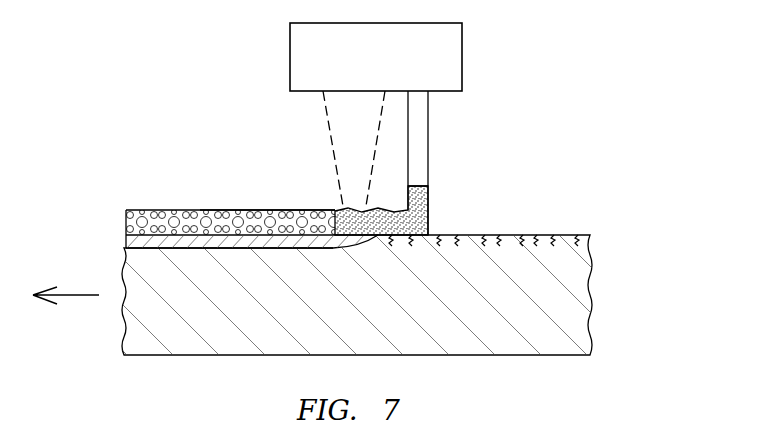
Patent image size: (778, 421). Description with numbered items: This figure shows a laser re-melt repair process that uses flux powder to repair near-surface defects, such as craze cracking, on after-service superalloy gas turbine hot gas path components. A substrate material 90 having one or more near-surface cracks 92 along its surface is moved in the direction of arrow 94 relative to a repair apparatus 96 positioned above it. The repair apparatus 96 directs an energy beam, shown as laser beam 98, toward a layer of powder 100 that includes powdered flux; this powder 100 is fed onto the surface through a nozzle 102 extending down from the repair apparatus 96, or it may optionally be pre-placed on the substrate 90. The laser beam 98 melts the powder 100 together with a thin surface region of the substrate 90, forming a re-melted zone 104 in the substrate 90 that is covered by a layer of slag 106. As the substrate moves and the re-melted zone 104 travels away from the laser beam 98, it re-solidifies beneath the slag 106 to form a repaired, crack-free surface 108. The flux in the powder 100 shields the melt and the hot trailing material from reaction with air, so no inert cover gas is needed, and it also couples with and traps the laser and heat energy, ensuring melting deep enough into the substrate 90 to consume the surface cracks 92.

The substrate material 90 is at (573, 280).
The near-surface cracks 92 is at (548, 235).
The arrow 94 is at (78, 296).
The repair apparatus 96 is at (289, 57).
The laser beam 98 is at (333, 150).
The powder 100 is at (378, 210).
The nozzle 102 is at (428, 125).
The re-melted zone 104 is at (133, 242).
The slag 106 is at (137, 222).
The repaired, crack-free surface 108 is at (221, 237).